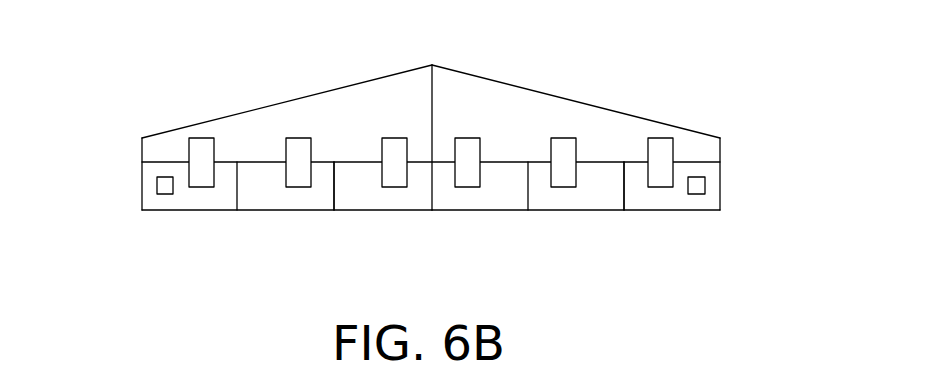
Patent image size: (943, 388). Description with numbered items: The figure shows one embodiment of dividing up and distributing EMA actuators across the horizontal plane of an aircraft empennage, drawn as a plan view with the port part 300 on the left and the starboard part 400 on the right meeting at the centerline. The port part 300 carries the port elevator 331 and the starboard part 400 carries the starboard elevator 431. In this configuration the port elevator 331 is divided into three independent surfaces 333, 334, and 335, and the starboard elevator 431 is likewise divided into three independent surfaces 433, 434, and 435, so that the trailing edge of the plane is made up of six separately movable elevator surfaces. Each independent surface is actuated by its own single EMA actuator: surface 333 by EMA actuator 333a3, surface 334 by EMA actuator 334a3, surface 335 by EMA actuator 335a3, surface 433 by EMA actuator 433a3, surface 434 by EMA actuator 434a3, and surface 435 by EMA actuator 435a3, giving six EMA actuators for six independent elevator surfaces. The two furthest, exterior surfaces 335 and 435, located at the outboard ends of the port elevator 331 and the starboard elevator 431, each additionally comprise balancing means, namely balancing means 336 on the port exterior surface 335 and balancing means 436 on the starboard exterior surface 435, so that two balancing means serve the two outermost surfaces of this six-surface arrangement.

The port part of the horizontal plane of the empennage 300 is at (220, 118).
The starboard part of the horizontal plane of the empennage 400 is at (655, 120).
The port elevator 331 is at (222, 248).
The starboard elevator 431 is at (632, 237).
The independent surface 333 is at (383, 197).
The independent surface 334 is at (297, 195).
The independent surface 335 is at (183, 195).
The independent surface 433 is at (478, 198).
The independent surface 434 is at (575, 200).
The independent surface 435 is at (670, 198).
The EMA actuator 333a3 is at (387, 138).
The EMA actuator 334a3 is at (290, 137).
The EMA actuator 335a3 is at (195, 156).
The EMA actuator 433a3 is at (477, 138).
The EMA actuator 434a3 is at (568, 138).
The EMA actuator 435a3 is at (667, 157).
The balancing means 336 is at (163, 183).
The balancing means 436 is at (695, 185).